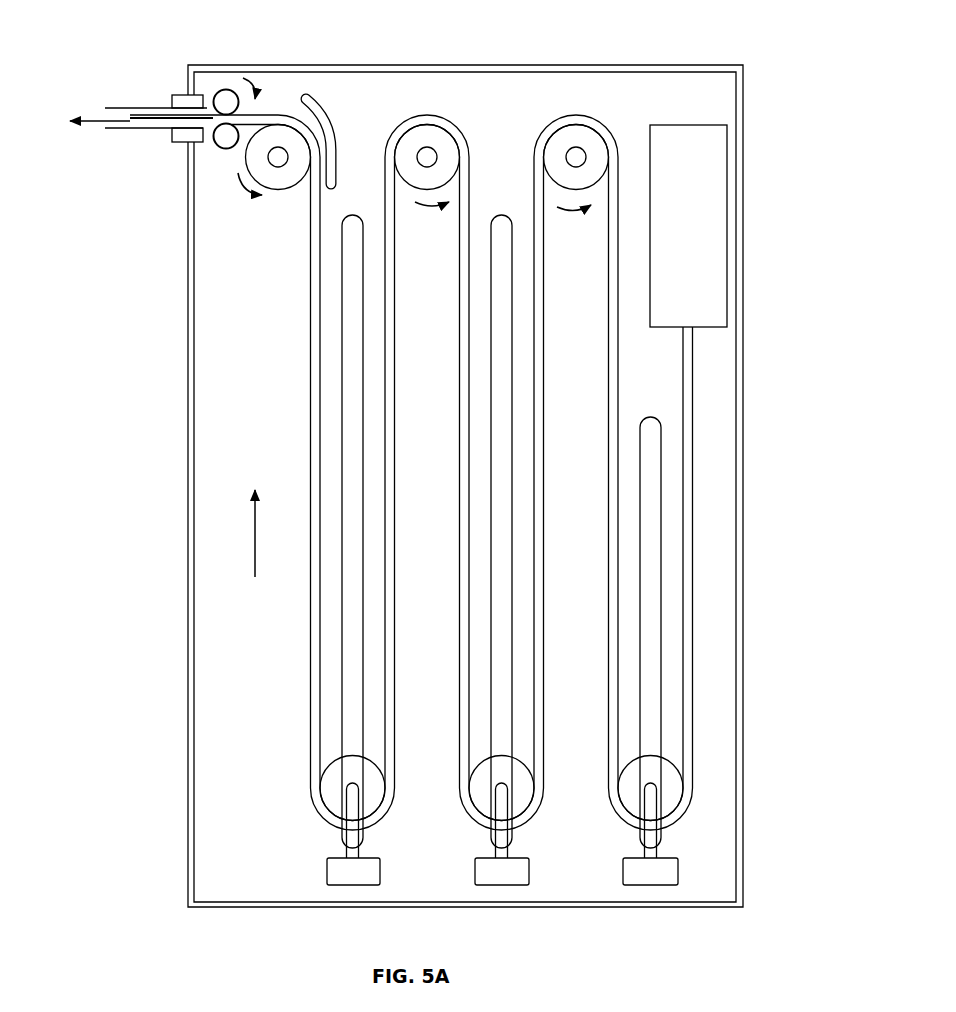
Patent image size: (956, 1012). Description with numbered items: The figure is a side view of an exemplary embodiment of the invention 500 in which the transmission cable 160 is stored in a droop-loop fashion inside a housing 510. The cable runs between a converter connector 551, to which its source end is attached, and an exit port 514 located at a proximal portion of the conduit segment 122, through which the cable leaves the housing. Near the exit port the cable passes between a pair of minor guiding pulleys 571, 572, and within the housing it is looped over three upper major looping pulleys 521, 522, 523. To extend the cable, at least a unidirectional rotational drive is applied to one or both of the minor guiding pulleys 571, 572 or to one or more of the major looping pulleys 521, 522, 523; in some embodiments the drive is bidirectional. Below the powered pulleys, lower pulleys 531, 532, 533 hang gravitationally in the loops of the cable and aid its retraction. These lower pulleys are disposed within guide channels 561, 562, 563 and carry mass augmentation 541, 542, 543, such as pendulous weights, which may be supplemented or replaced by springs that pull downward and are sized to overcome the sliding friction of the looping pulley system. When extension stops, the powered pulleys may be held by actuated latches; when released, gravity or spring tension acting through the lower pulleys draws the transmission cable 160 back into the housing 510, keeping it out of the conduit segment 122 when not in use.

The exemplary embodiment of the invention 500 is at (769, 102).
The housing 510 is at (536, 66).
The conduit segment 122 is at (143, 107).
The exit port 514 is at (173, 141).
The minor guiding pulley 571 is at (222, 88).
The minor guiding pulley 572 is at (218, 157).
The transmission cable 160 is at (310, 262).
The major looping pulley 521 is at (288, 192).
The major looping pulley 522 is at (400, 136).
The major looping pulley 523 is at (584, 121).
The converter connector 551 is at (688, 226).
The lower pulley 531 is at (333, 760).
The lower pulley 532 is at (483, 768).
The lower pulley 533 is at (628, 764).
The guide channel 561 is at (353, 720).
The guide channel 562 is at (506, 722).
The guide channel 563 is at (648, 713).
The mass augmentation 541 is at (327, 875).
The mass augmentation 542 is at (475, 875).
The mass augmentation 543 is at (623, 875).